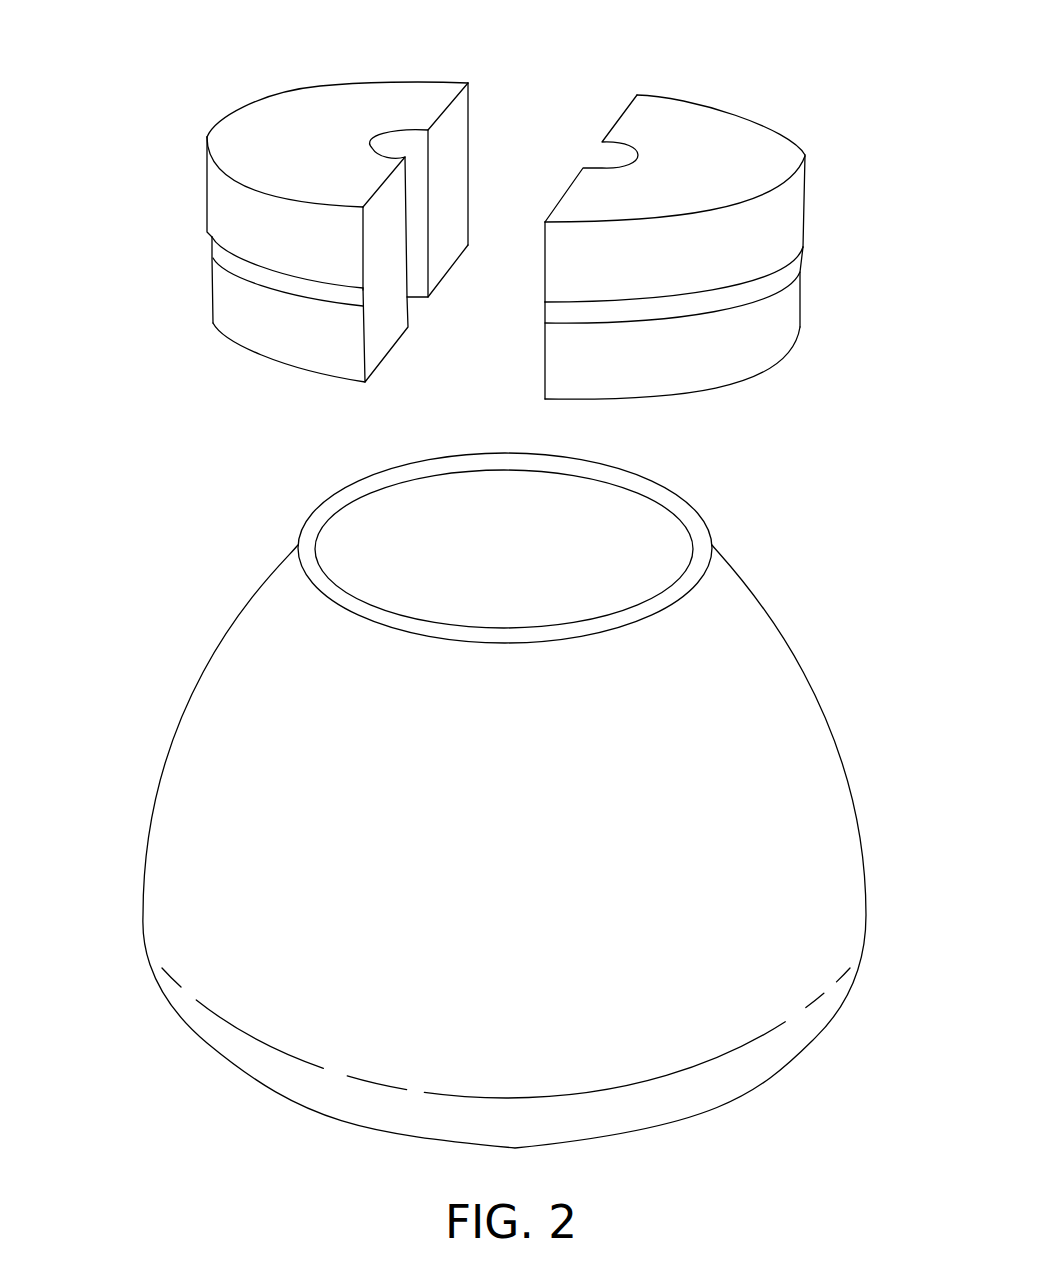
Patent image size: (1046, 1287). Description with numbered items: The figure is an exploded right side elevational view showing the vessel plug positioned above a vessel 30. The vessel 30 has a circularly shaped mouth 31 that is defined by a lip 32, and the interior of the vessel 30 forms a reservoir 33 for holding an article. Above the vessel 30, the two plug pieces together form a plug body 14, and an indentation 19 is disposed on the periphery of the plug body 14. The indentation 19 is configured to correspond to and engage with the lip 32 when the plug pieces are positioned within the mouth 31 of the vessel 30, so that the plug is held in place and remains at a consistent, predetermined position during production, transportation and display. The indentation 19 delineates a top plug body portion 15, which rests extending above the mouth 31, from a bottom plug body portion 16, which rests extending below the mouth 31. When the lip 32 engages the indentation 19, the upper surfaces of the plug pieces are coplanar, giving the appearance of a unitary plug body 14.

The plug body 14 is at (207, 47).
The top plug body portion 15 is at (200, 191).
The bottom plug body portion 16 is at (203, 296).
The indentation 19 is at (785, 273).
The vessel 30 is at (160, 1132).
The mouth 31 is at (590, 520).
The lip 32 is at (700, 583).
The reservoir 33 is at (637, 842).